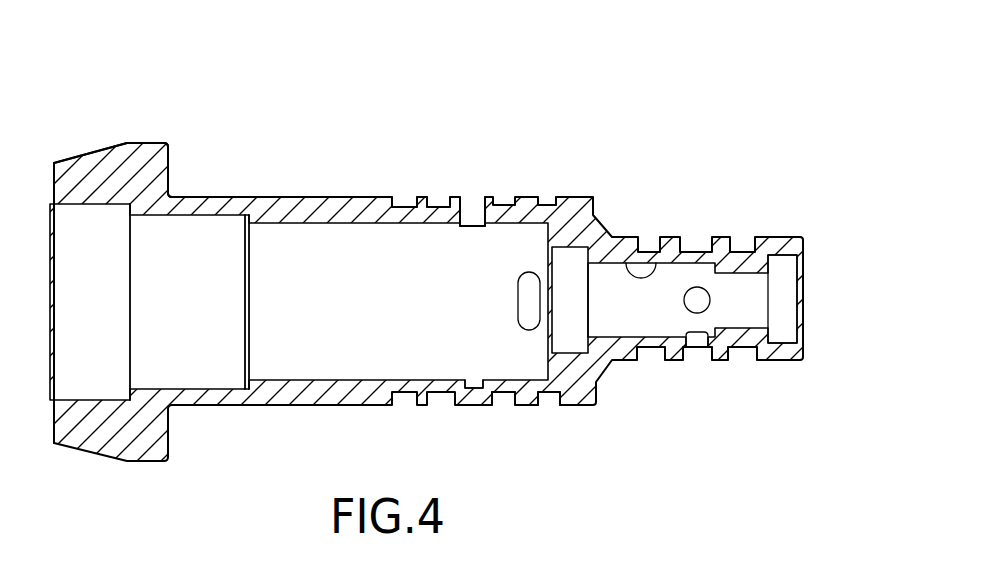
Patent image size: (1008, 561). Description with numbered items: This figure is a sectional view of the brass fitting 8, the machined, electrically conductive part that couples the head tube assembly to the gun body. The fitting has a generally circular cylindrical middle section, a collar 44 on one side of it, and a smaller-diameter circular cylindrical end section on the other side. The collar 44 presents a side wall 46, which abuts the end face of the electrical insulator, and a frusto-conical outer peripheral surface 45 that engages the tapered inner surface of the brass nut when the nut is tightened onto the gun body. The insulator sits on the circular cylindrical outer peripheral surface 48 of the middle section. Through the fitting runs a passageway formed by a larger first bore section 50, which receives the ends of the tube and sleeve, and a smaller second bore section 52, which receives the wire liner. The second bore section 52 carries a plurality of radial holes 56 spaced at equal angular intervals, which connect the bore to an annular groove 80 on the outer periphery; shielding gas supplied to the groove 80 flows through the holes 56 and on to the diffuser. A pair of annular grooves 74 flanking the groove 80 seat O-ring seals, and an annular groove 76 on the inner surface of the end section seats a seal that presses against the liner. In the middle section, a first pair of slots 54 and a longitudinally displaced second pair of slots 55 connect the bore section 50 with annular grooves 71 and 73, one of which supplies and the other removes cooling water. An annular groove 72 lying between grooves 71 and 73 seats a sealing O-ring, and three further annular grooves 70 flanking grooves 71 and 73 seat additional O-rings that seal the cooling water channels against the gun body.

The brass fitting 8 is at (597, 88).
The collar 44 is at (148, 143).
The frusto-conical outer peripheral surface 45 is at (93, 152).
The side wall 46 is at (168, 166).
The circular cylindrical outer peripheral surface 48 is at (236, 408).
The first bore section 50 is at (343, 224).
The second bore section 52 is at (655, 256).
The first pair of slots 54 is at (527, 270).
The second pair of slots 55 is at (470, 230).
The radial holes 56 is at (698, 287).
The annular grooves 70 is at (442, 197).
The annular groove 71 is at (477, 197).
The annular groove 72 is at (497, 395).
The annular groove 73 is at (532, 396).
The annular grooves 74 is at (655, 352).
The annular groove 76 is at (778, 306).
The annular groove 80 is at (697, 352).